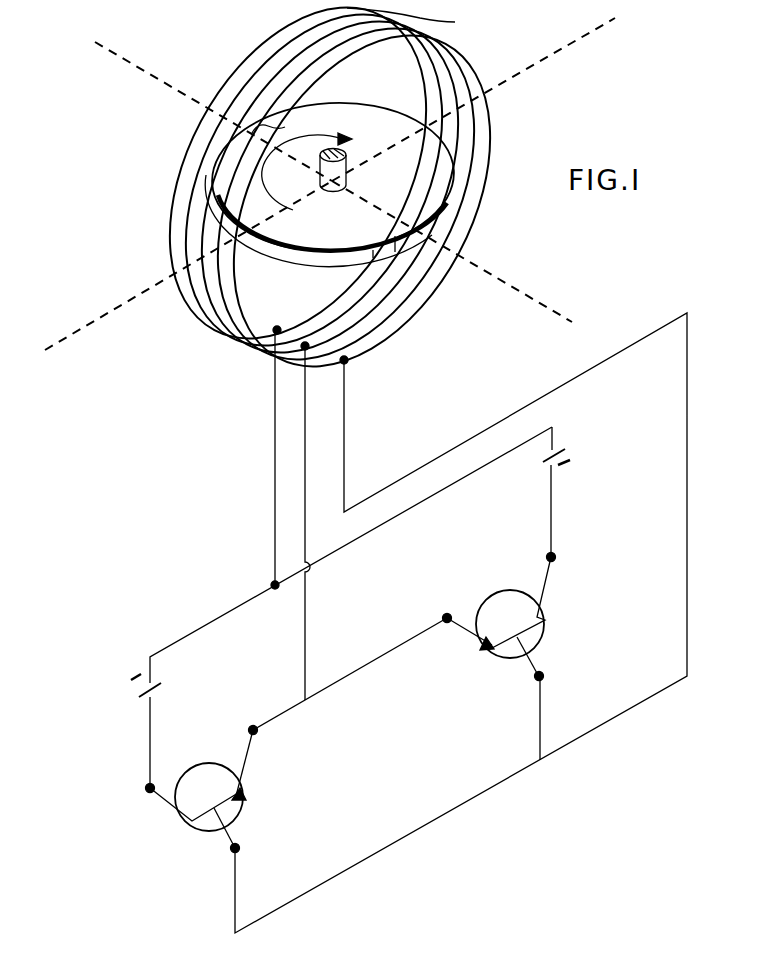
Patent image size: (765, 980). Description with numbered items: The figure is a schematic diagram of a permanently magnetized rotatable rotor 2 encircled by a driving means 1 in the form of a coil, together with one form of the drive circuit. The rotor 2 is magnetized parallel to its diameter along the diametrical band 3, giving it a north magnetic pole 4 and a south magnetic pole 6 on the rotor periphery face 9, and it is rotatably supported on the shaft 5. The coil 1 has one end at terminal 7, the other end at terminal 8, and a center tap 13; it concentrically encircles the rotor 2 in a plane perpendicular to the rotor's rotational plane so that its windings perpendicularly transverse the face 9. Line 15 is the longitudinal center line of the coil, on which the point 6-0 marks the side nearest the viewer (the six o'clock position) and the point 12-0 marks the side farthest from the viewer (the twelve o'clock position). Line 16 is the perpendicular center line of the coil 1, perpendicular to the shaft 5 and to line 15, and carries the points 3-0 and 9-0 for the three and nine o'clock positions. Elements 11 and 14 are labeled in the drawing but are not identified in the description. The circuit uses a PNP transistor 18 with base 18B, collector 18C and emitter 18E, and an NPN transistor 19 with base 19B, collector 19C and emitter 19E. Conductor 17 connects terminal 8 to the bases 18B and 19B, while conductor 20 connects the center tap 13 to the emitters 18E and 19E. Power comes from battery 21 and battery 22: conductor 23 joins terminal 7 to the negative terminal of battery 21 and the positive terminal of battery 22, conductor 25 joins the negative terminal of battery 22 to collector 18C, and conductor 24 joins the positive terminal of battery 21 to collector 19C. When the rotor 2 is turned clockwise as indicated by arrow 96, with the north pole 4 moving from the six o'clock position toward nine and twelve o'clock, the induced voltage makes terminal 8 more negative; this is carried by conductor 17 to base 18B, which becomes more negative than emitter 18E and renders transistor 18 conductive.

The driving means 1 is at (408, 20).
The rotor 2 is at (325, 238).
The diametrical band 3 is at (376, 200).
The north magnetic pole 4 is at (410, 220).
The shaft 5 is at (347, 151).
The south magnetic pole 6 is at (276, 127).
The terminal 7 is at (277, 330).
The terminal 8 is at (344, 360).
The rotor periphery face 9 is at (383, 254).
The outer coil turn 11 is at (280, 44).
The center tap 13 is at (305, 346).
The coil 14 is at (329, 205).
The longitudinal center line 15 is at (533, 300).
The perpendicular center line 16 is at (556, 50).
The conductor 17 is at (344, 485).
The semi-conductor 18 is at (544, 630).
The base terminal 18B is at (543, 676).
The collector terminal 18C is at (556, 557).
The emitter terminal 18E is at (447, 618).
The semi-conductor 19 is at (243, 822).
The base terminal 19B is at (240, 848).
The collector terminal 19C is at (141, 800).
The emitter terminal 19E is at (253, 730).
The conductor 20 is at (300, 485).
The battery 21 is at (160, 688).
The battery 22 is at (545, 463).
The conductor 23 is at (273, 487).
The conductor 24 is at (150, 750).
The conductor 25 is at (552, 525).
The arrow 96 is at (316, 132).
The twelve o'clock point 12-0 is at (95, 42).
The six o'clock point 6-0 is at (572, 322).
The nine o'clock point 9-0 is at (45, 350).
The three o'clock point 3-0 is at (615, 18).